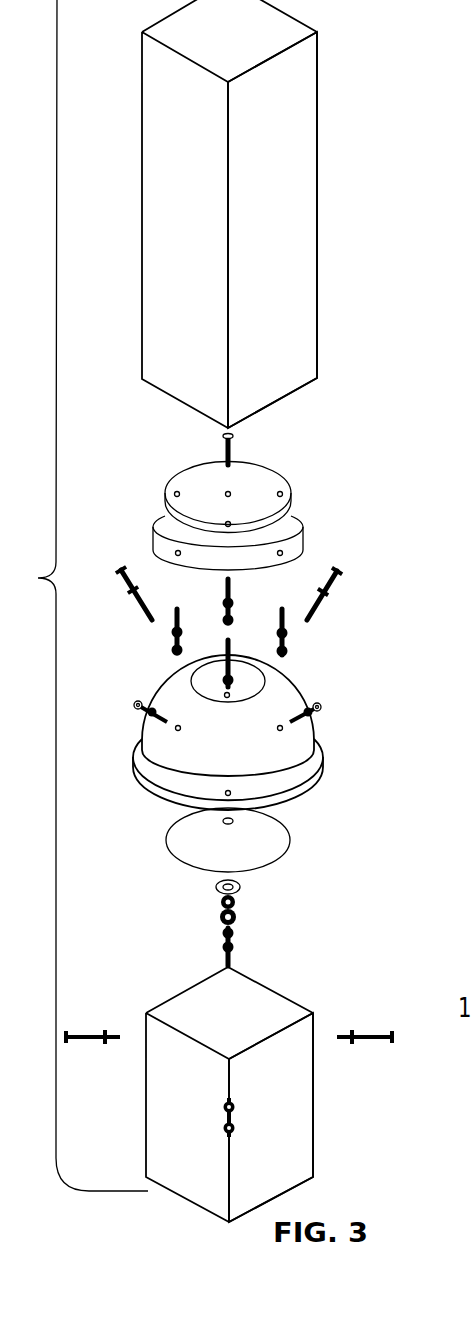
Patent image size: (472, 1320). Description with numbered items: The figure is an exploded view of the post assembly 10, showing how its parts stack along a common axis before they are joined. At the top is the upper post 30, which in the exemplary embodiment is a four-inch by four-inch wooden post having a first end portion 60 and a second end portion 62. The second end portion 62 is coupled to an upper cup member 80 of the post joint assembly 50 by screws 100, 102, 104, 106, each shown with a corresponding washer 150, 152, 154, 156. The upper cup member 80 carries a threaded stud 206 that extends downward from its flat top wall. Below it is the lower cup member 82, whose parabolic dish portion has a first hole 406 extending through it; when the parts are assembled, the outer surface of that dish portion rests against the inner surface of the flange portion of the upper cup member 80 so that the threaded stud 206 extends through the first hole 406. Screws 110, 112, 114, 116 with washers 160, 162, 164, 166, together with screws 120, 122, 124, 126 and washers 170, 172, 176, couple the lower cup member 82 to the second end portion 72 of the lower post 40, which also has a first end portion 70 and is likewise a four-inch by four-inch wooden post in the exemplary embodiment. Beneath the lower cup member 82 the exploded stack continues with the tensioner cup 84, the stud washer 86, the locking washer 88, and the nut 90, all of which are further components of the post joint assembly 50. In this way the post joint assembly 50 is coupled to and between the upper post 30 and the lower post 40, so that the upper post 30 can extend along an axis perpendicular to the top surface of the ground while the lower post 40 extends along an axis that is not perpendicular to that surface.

The post assembly 10 is at (76, 595).
The upper post 30 is at (289, 214).
The first end portion 60 is at (290, 72).
The second end portion 62 is at (303, 353).
The threaded stud 206 is at (237, 443).
The upper cup member 80 is at (300, 523).
The screw 104 is at (223, 598).
The washer 154 is at (256, 598).
The screw 100 is at (129, 639).
The washer 150 is at (170, 638).
The screw 102 is at (334, 594).
The washer 152 is at (288, 634).
The screw 110 is at (107, 580).
The washer 160 is at (133, 592).
The screw 112 is at (379, 599).
The washer 162 is at (333, 597).
The post joint assembly 50 is at (266, 725).
The first hole 406 is at (215, 702).
The screw 106 is at (205, 669).
The washer 156 is at (215, 678).
The lower cup member 82 is at (317, 763).
The screw 114 is at (115, 738).
The washer 164 is at (146, 728).
The screw 116 is at (349, 712).
The washer 166 is at (318, 714).
The tensioner cup 84 is at (280, 837).
The stud washer 86 is at (241, 885).
The locking washer 88 is at (237, 903).
The nut 90 is at (237, 922).
The screw 124 is at (223, 937).
The lower post 40 is at (275, 1092).
The first end portion 70 is at (305, 1030).
The second end portion 72 is at (305, 1170).
The screw 120 is at (91, 1043).
The washer 170 is at (108, 1048).
The screw 122 is at (394, 1035).
The washer 172 is at (357, 1042).
The screw 126 is at (160, 1138).
The washer 176 is at (222, 1108).